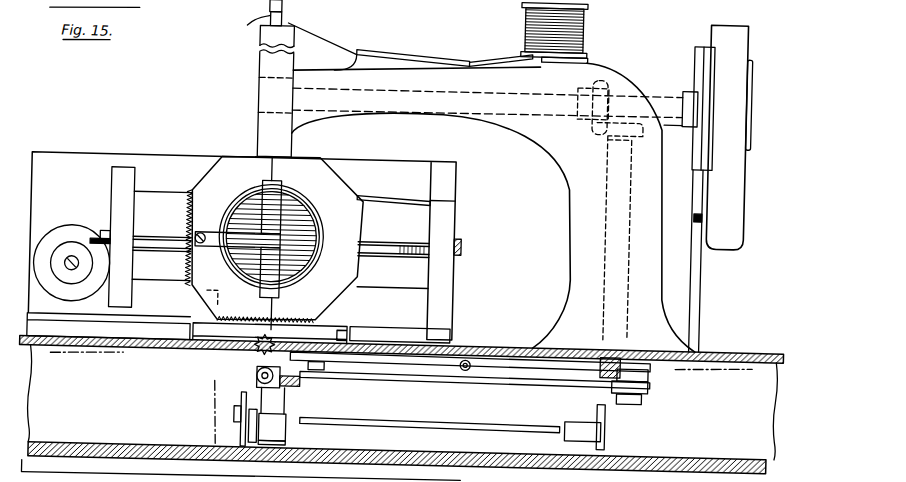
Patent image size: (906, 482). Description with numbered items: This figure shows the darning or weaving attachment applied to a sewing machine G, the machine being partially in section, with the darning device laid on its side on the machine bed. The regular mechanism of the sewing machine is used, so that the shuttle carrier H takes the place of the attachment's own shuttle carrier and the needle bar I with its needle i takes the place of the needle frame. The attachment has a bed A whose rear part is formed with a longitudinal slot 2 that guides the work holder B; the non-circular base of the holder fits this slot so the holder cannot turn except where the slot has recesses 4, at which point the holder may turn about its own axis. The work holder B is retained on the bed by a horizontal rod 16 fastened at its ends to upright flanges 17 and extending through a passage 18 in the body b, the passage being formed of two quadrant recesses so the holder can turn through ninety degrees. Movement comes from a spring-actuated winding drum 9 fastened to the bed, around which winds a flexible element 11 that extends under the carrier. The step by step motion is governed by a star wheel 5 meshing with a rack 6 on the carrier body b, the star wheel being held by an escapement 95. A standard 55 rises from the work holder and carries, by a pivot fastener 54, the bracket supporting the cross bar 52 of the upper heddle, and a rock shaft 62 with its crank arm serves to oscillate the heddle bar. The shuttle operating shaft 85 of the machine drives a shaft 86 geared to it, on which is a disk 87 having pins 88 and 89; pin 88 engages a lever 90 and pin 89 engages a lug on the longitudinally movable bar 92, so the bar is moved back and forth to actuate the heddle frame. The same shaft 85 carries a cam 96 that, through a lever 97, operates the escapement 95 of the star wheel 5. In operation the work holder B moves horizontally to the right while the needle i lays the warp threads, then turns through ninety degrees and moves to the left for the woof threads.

The needle bar I is at (258, 78).
The sewing machine G is at (517, 176).
The bed A is at (410, 160).
The work holder B is at (366, 226).
The body of the carrier b is at (314, 328).
The needle i is at (273, 176).
The longitudinal slot 2 is at (404, 217).
The recesses 4 is at (357, 199).
The star wheel 5 is at (296, 323).
The rack 6 is at (188, 262).
The winding drum 9 is at (66, 290).
The flexible element 11 is at (95, 246).
The horizontal rod 16 is at (393, 265).
The upright flanges 17 is at (212, 310).
The passage 18 is at (402, 361).
The cross bar 52 is at (282, 288).
The pivot fastener 54 is at (210, 253).
The standard 55 is at (211, 240).
The rock shaft 62 is at (275, 326).
The shuttle operating shaft 85 is at (640, 366).
The shaft 86 is at (476, 430).
The disk 87 is at (257, 460).
The pin 88 is at (232, 410).
The pin 89 is at (280, 455).
The lever 90 is at (245, 400).
The longitudinally movable bar 92 is at (290, 422).
The escapement 95 is at (325, 380).
The cam 96 is at (604, 386).
The lever 97 is at (472, 360).
The shuttle carrier H is at (303, 392).